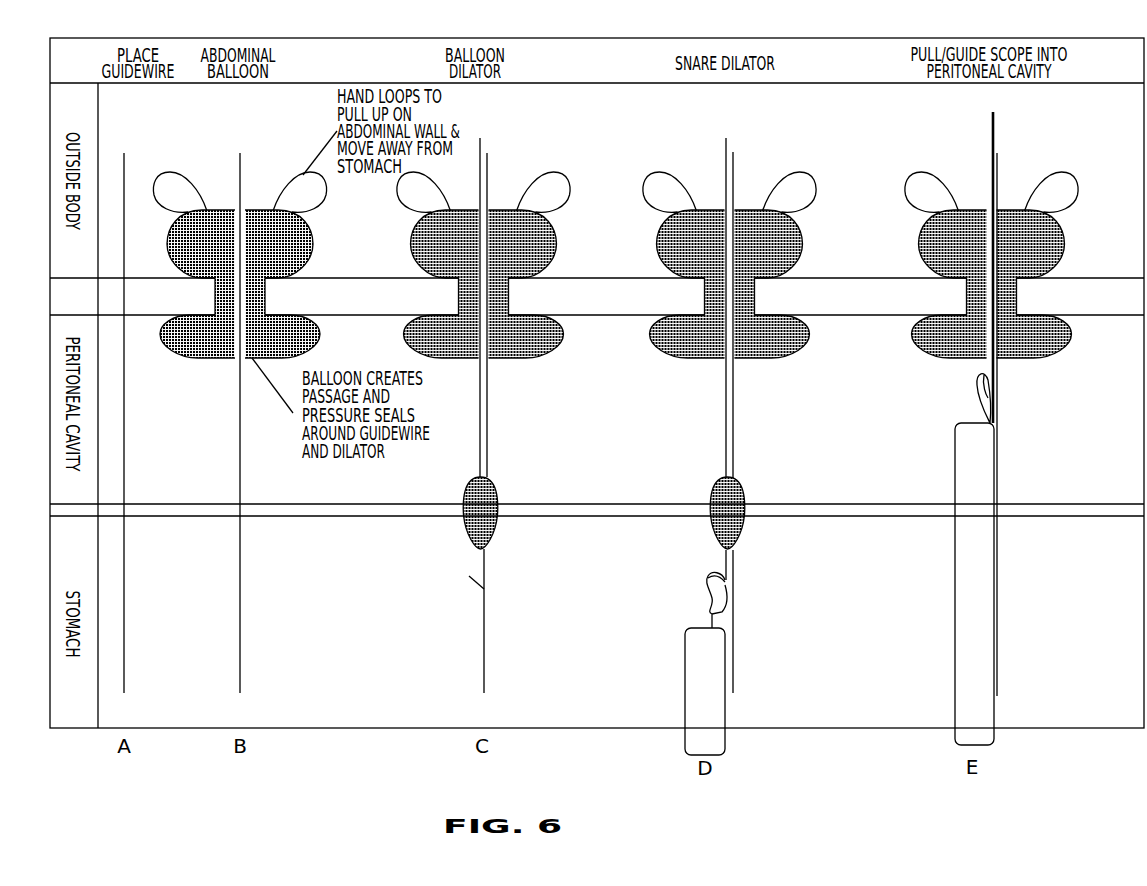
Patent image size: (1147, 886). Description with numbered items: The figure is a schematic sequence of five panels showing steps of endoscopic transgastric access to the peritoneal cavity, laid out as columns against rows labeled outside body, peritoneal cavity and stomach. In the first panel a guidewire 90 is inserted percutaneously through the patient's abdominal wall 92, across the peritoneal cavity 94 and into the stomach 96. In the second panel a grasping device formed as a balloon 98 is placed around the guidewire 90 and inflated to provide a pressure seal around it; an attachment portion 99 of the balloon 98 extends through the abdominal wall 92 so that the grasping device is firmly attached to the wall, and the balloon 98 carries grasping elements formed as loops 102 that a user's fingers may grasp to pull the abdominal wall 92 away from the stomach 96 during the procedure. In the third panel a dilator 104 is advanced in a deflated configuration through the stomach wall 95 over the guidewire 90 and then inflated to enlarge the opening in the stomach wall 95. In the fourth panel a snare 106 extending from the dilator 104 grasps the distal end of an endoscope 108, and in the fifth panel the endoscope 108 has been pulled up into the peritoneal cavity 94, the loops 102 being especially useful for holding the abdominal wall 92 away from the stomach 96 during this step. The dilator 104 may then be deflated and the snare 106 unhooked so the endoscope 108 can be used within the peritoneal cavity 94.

In FIG. 6A, the guidewire 90 is at (126, 167).
In FIG. 6B, the guidewire 90 is at (242, 167).
In FIG. 6C, the guidewire 90 is at (489, 167).
In FIG. 6D, the guidewire 90 is at (735, 167).
In FIG. 6E, the guidewire 90 is at (1000, 167).
In FIG. 6A, the abdominal wall 92 is at (178, 306).
In FIG. 6C, the abdominal wall 92 is at (603, 306).
In FIG. 6D, the abdominal wall 92 is at (852, 306).
In FIG. 6A, the peritoneal cavity 94 is at (187, 411).
In FIG. 6C, the peritoneal cavity 94 is at (620, 411).
In FIG. 6D, the peritoneal cavity 94 is at (872, 411).
In FIG. 6A, the stomach wall 95 is at (163, 507).
In FIG. 6C, the stomach wall 95 is at (598, 507).
In FIG. 6D, the stomach wall 95 is at (856, 507).
In FIG. 6A, the stomach 96 is at (186, 593).
In FIG. 6C, the stomach 96 is at (617, 593).
In FIG. 6D, the stomach 96 is at (872, 593).
In FIG. 6B, the balloon 98 is at (309, 236).
In FIG. 6C, the balloon 98 is at (551, 236).
In FIG. 6D, the balloon 98 is at (797, 236).
In FIG. 6E, the balloon 98 is at (1065, 236).
In FIG. 6B, the attachment portion 99 is at (316, 340).
In FIG. 6C, the attachment portion 99 is at (556, 340).
In FIG. 6D, the attachment portion 99 is at (801, 340).
In FIG. 6E, the attachment portion 99 is at (1067, 340).
In FIG. 6B, the loops 102 is at (183, 183).
In FIG. 6C, the loops 102 is at (552, 187).
In FIG. 6D, the loops 102 is at (798, 187).
In FIG. 6E, the loops 102 is at (944, 185).
In FIG. 6C, the dilator 104 is at (468, 481).
In FIG. 6D, the dilator 104 is at (713, 482).
In FIG. 6C, the snare 106 is at (469, 578).
In FIG. 6D, the endoscope 108 is at (688, 657).
In FIG. 6E, the endoscope 108 is at (961, 649).